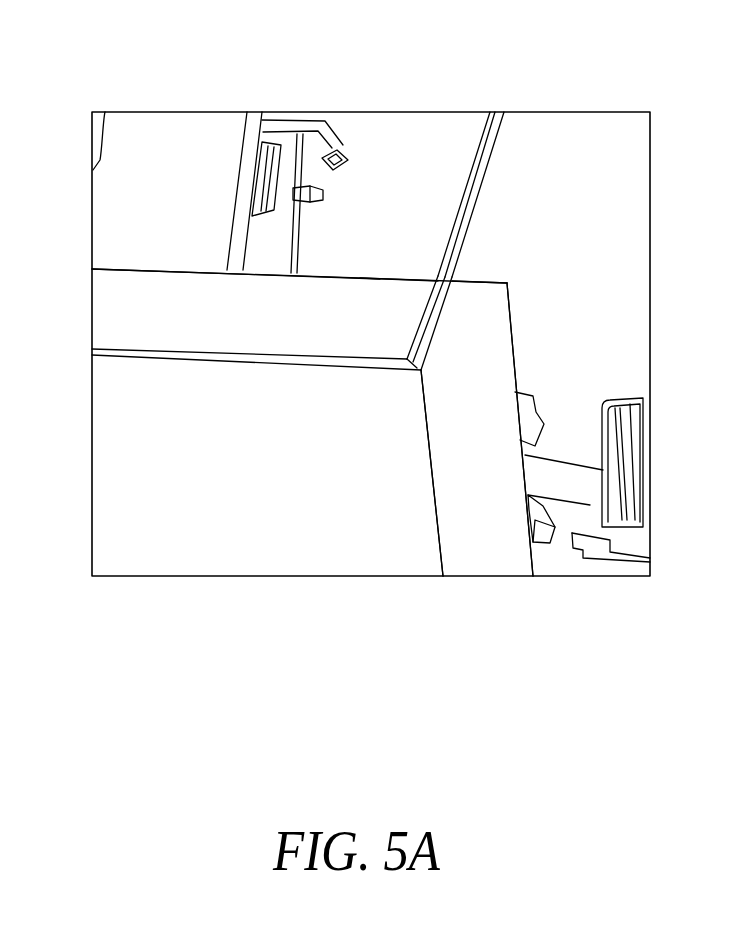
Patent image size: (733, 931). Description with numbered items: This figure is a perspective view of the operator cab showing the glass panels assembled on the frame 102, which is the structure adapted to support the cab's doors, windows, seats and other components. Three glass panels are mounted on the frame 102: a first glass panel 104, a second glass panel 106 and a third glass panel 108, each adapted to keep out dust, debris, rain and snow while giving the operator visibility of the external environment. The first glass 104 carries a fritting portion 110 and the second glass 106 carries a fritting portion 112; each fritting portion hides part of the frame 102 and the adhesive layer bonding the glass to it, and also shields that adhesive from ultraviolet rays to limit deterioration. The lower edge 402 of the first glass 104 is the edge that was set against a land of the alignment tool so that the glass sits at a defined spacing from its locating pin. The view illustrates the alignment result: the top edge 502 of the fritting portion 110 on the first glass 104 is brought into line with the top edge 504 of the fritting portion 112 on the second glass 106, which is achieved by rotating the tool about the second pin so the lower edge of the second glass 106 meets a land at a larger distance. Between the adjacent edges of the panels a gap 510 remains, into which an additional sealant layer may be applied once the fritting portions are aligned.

The frame 102 is at (310, 531).
The first glass panel 104 is at (378, 137).
The second glass panel 106 is at (615, 321).
The third glass panel 108 is at (667, 463).
The fritting portion 110 is at (118, 309).
The fritting portion 112 is at (487, 557).
The lower edge 402 is at (157, 357).
The top edge 502 is at (378, 273).
The top edge 504 is at (477, 282).
The gap 510 is at (428, 264).